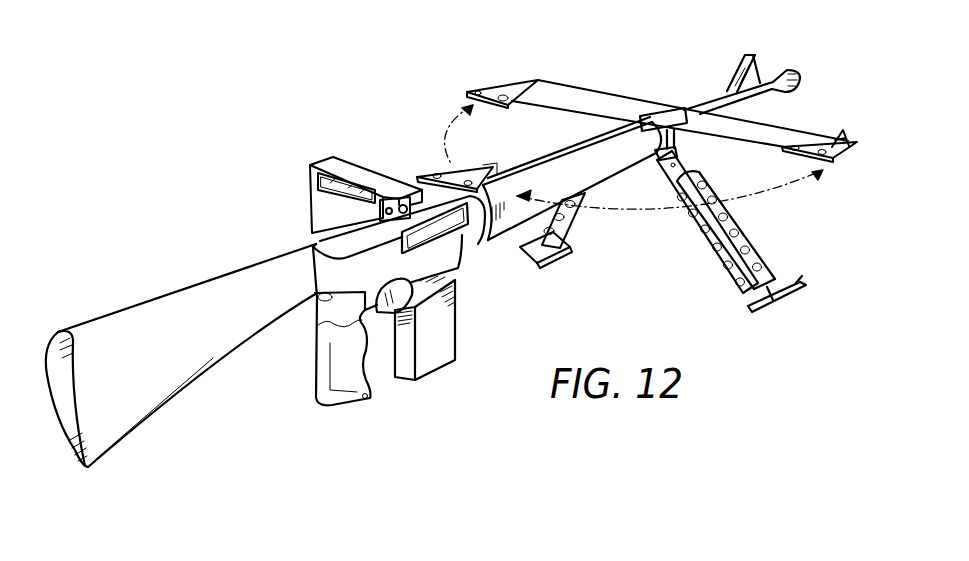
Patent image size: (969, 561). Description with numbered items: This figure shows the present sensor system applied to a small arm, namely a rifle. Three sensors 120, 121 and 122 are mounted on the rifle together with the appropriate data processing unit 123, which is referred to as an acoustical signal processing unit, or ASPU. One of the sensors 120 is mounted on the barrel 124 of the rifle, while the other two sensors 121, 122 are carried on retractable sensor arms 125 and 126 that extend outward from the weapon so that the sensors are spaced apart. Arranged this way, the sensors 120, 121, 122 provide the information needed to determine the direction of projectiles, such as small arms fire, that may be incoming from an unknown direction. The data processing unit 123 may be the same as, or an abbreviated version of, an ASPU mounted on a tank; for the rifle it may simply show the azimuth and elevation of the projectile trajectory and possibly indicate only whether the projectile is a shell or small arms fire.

The sensor 120 is at (460, 172).
The sensor 121 is at (490, 93).
The sensor 122 is at (838, 160).
The data processing unit 123 is at (308, 176).
The barrel 124 is at (588, 179).
The retractable sensor arm 125 is at (608, 100).
The retractable sensor arm 126 is at (780, 130).